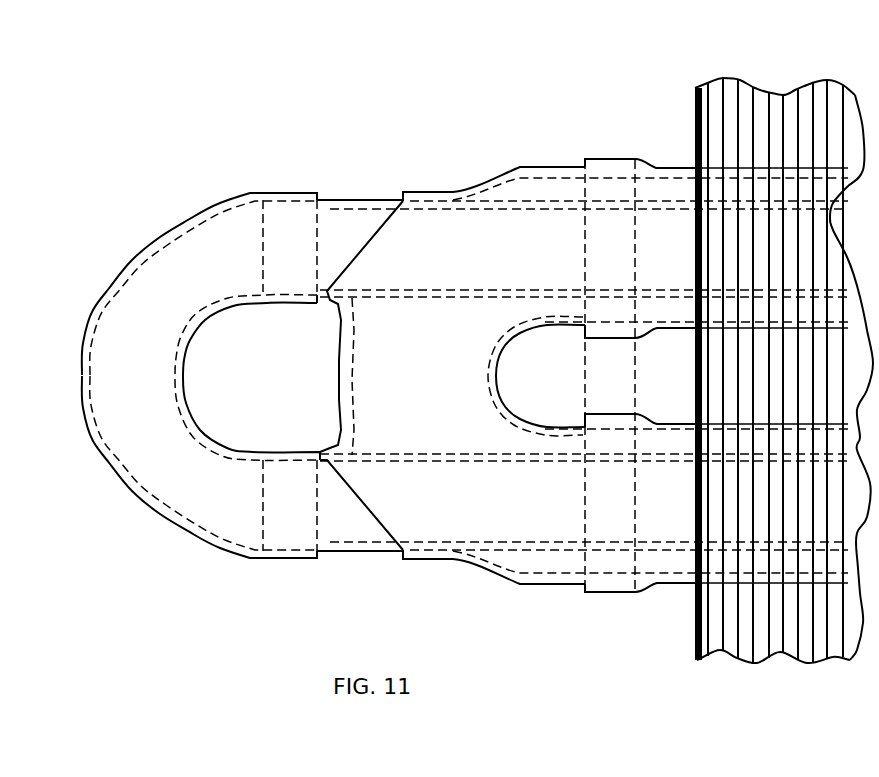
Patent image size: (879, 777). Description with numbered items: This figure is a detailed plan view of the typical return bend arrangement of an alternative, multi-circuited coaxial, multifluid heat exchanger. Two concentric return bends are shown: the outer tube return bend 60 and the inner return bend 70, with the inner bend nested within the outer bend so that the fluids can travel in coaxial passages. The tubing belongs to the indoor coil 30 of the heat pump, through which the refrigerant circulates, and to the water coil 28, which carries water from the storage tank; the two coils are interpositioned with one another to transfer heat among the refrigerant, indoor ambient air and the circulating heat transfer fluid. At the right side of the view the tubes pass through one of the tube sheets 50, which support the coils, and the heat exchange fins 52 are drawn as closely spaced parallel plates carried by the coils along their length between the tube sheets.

The inner return bend 70 is at (108, 287).
The indoor coil 30 is at (350, 200).
The outer tube return bend 60 is at (520, 172).
The water coil 28 is at (662, 165).
The heat exchange fins 52 is at (722, 78).
The tube sheets 50 is at (697, 660).